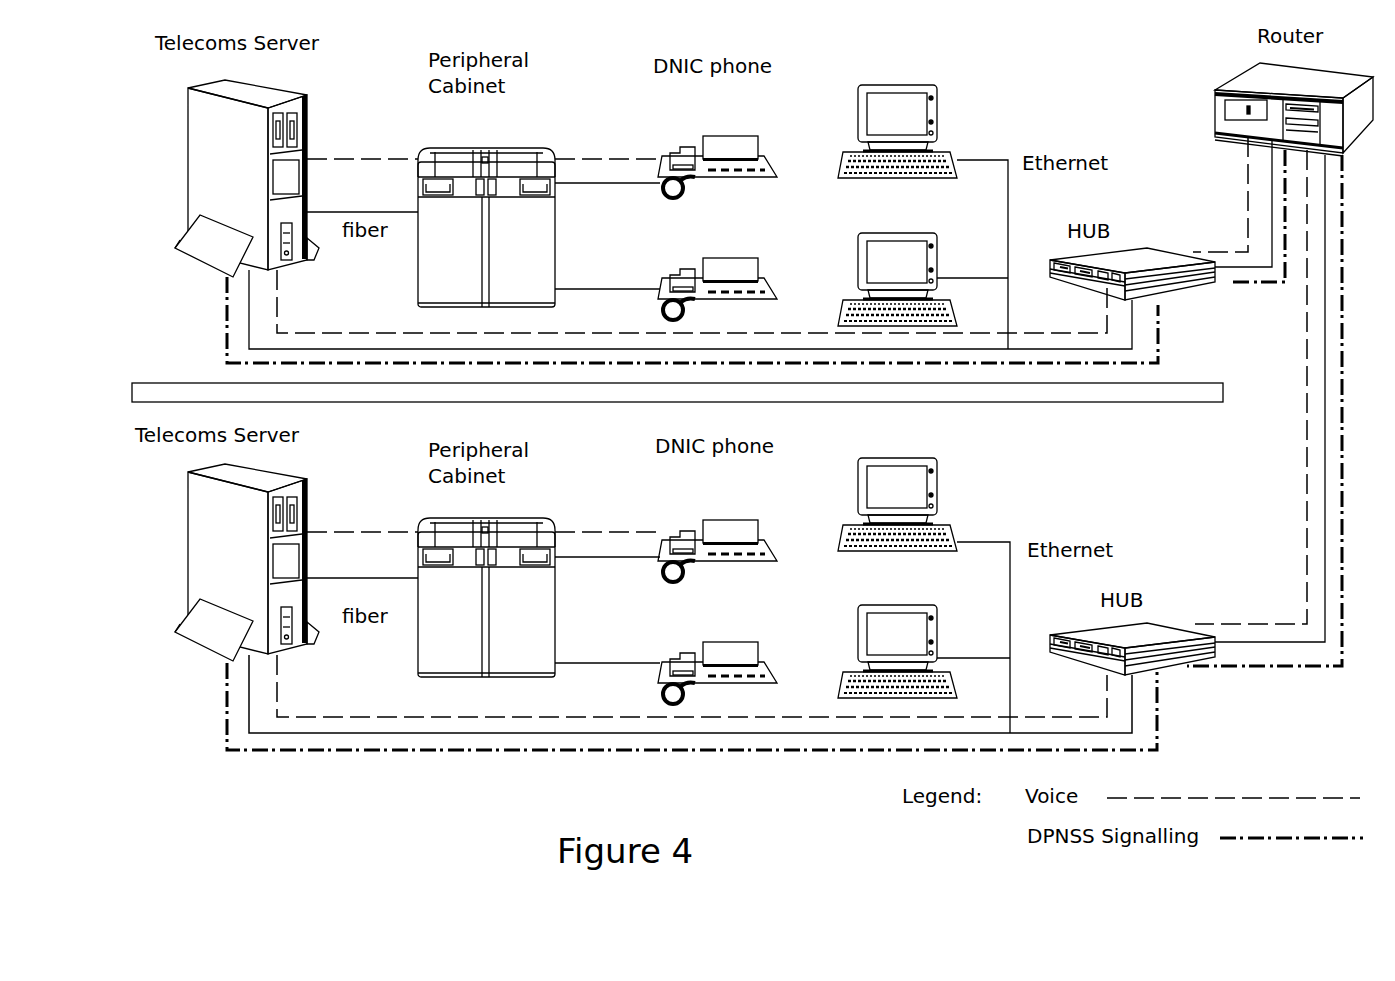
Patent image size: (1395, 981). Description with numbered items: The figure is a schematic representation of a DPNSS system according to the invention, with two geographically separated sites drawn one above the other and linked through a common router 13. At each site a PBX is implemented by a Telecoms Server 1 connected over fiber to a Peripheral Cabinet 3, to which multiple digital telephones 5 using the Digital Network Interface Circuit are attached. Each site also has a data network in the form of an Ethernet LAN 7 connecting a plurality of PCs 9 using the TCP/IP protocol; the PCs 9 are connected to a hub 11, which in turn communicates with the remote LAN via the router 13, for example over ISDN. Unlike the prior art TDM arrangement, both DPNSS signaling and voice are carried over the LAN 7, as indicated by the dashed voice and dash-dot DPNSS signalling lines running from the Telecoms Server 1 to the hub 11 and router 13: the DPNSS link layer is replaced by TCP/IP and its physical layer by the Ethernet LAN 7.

The Telecoms Server 1 is at (183, 108).
The Peripheral Cabinet 3 is at (555, 222).
The telephones 5 is at (733, 137).
The Ethernet LAN 7 is at (363, 350).
The PCs 9 is at (942, 102).
The hub 11 is at (1190, 293).
The router 13 is at (1236, 67).